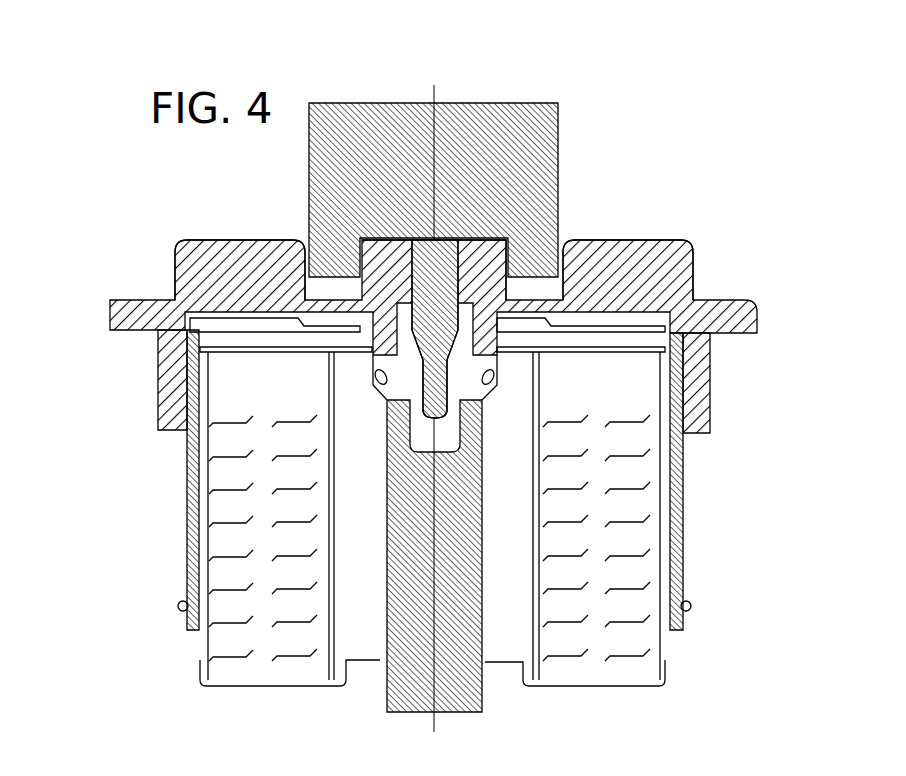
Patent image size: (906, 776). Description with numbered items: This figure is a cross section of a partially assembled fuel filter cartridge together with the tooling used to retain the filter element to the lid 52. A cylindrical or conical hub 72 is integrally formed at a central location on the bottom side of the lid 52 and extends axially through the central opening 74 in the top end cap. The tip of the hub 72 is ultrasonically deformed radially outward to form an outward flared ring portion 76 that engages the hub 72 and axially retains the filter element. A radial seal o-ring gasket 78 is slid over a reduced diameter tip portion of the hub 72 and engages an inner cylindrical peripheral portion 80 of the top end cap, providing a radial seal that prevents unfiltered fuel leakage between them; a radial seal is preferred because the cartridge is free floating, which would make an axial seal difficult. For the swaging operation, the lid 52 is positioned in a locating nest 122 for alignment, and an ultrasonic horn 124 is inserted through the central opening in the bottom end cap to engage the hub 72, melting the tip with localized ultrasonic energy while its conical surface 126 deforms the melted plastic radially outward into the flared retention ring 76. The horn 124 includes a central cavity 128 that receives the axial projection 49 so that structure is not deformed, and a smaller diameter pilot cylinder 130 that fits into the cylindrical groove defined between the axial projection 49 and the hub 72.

The axial projection 49 is at (441, 415).
The lid 52 is at (758, 326).
The hub 72 is at (400, 307).
The central opening 74 is at (377, 383).
The flared ring portion 76 is at (393, 388).
The o-ring gasket 78 is at (377, 370).
The inner cylindrical peripheral portion 80 is at (400, 330).
The locating nest 122 is at (485, 121).
The ultrasonic horn 124 is at (398, 705).
The conical surface 126 is at (700, 425).
The central cavity 128 is at (500, 243).
The pilot cylinder 130 is at (560, 290).